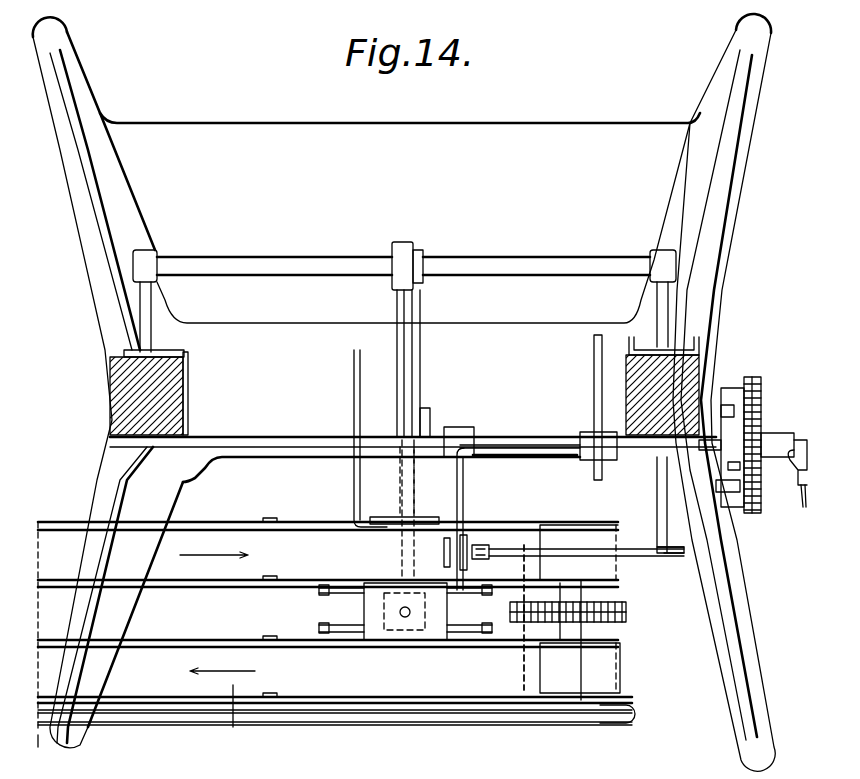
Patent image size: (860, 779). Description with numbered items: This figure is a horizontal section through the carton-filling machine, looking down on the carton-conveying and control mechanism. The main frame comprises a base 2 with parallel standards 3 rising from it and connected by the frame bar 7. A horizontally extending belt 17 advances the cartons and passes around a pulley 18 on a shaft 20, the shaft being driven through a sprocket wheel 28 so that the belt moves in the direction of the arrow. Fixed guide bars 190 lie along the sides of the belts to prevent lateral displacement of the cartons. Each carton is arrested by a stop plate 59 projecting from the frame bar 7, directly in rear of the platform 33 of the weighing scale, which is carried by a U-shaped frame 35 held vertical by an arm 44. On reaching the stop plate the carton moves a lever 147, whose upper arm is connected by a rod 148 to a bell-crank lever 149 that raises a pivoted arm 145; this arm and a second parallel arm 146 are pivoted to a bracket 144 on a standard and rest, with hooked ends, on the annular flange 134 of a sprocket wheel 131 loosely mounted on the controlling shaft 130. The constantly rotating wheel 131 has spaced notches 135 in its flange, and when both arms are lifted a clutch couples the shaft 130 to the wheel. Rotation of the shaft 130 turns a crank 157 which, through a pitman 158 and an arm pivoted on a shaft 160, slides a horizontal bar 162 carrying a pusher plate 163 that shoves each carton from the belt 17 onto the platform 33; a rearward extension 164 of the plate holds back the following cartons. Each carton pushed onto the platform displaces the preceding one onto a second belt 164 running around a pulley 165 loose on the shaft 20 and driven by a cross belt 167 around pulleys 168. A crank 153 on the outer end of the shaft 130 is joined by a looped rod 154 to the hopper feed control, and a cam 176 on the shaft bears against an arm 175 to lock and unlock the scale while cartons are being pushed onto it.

The base 2 is at (92, 268).
The standards 3 is at (124, 403).
The frame bar 7 is at (258, 438).
The belt 17 is at (221, 537).
The pulley 18 is at (523, 545).
The shaft 20 is at (627, 697).
The sprocket wheel 28 is at (594, 622).
The platform 33 is at (377, 623).
The U-shaped frame 35 is at (320, 595).
The arm 44 is at (413, 545).
The stop plate 59 is at (464, 503).
The controlling shaft 130 is at (564, 450).
The sprocket wheel 131 is at (757, 405).
The annular flange 134 is at (736, 395).
The notches 135 is at (730, 405).
The bracket 144 is at (705, 440).
The arm 145 is at (718, 520).
The arm 146 is at (740, 470).
The lever 147 is at (440, 563).
The link or rod 148 is at (602, 550).
The bell-crank lever 149 is at (674, 553).
The crank 153 is at (803, 455).
The rod 154 is at (803, 507).
The crank 157 is at (430, 413).
The pitman 158 is at (416, 378).
The shaft 160 is at (498, 262).
The horizontal bar 162 is at (405, 343).
The pusher plate 163 is at (380, 528).
The belt 164 is at (354, 387).
The pulley 165 is at (522, 665).
The cross belt 167 is at (138, 720).
The pulleys 168 is at (589, 727).
The arm 175 is at (596, 365).
The cam 176 is at (596, 470).
The guide bars 190 is at (299, 523).